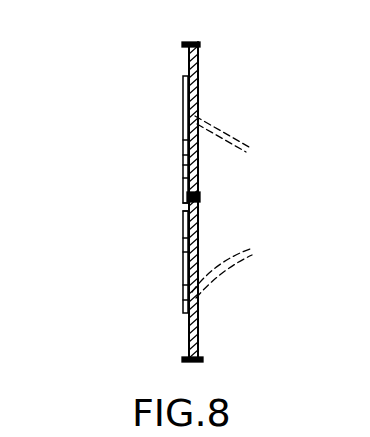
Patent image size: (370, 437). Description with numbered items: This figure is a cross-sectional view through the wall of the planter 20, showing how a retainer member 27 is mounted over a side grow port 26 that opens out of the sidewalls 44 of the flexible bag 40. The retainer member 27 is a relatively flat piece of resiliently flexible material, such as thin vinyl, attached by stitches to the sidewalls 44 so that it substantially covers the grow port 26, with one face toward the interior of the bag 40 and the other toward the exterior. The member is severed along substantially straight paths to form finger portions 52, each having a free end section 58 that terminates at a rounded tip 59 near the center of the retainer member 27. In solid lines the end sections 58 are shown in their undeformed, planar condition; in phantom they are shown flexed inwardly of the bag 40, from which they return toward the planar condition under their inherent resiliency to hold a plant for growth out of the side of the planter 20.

The planter 20 is at (122, 60).
The sidewalls 44 is at (190, 47).
The finger portion 52 is at (184, 120).
The end section 58 is at (184, 147).
The retainer member 27 is at (184, 170).
The tip 59 is at (282, 101).
The side grow port 26 is at (183, 289).
The bag 40 is at (199, 328).